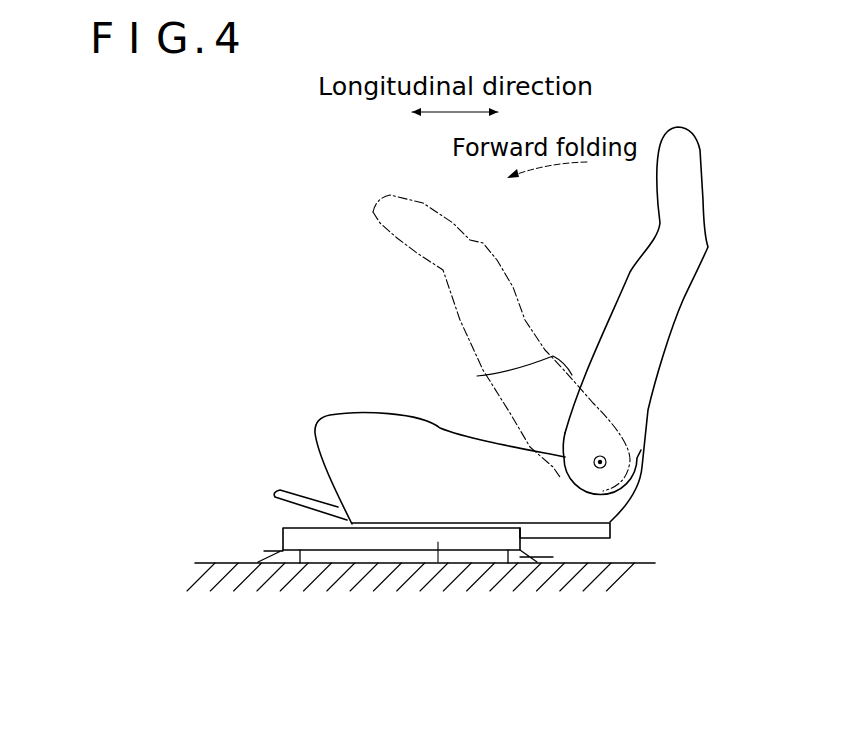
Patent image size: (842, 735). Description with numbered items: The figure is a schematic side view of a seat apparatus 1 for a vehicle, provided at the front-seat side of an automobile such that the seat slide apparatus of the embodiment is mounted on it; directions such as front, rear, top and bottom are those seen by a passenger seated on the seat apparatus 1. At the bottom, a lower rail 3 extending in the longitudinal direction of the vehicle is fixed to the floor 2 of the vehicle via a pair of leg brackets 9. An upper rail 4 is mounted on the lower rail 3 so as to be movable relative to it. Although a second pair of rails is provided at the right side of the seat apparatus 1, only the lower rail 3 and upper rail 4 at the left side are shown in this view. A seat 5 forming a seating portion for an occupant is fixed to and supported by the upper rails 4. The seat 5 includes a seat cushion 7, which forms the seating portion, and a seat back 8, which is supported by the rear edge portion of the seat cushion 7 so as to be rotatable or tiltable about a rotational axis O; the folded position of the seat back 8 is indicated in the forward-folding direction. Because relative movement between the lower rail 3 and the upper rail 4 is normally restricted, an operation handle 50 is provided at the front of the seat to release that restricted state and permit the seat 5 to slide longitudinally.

The seat apparatus 1 is at (568, 290).
The floor 2 is at (219, 561).
The lower rail 3 is at (440, 545).
The upper rail 4 is at (614, 526).
The seat 5 is at (448, 358).
The seat cushion 7 is at (469, 438).
The seat back 8 is at (481, 377).
The leg brackets 9 is at (300, 569).
The operation handle 50 is at (298, 490).
The rotational axis O is at (607, 462).